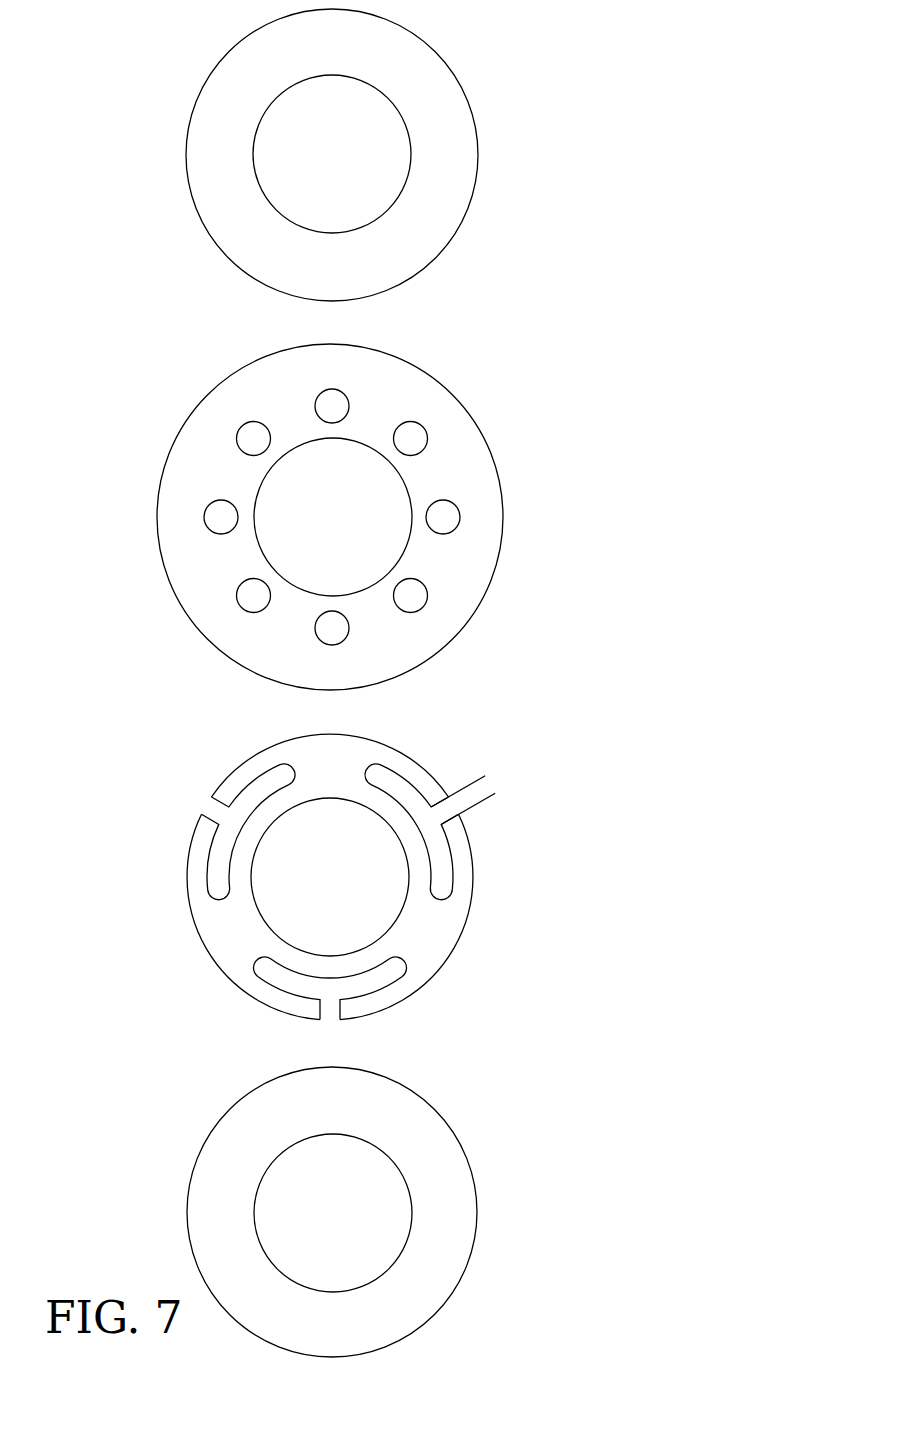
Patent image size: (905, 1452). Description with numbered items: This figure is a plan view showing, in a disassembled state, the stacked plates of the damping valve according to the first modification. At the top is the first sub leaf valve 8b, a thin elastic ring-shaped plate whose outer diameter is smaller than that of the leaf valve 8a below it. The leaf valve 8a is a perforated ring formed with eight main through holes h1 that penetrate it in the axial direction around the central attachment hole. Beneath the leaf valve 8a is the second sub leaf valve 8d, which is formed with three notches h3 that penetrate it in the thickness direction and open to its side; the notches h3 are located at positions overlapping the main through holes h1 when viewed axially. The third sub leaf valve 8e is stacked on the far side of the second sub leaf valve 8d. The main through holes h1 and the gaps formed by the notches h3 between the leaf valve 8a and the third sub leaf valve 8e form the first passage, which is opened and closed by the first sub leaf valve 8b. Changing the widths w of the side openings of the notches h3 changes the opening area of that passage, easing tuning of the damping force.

The leaf valve 8a is at (370, 517).
The first sub leaf valve 8b is at (465, 209).
The second sub leaf valve 8d is at (334, 888).
The third sub leaf valve 8e is at (467, 1250).
The main through holes h1 is at (242, 423).
The notches h3 is at (206, 878).
The width of opening portion of notch w is at (459, 760).